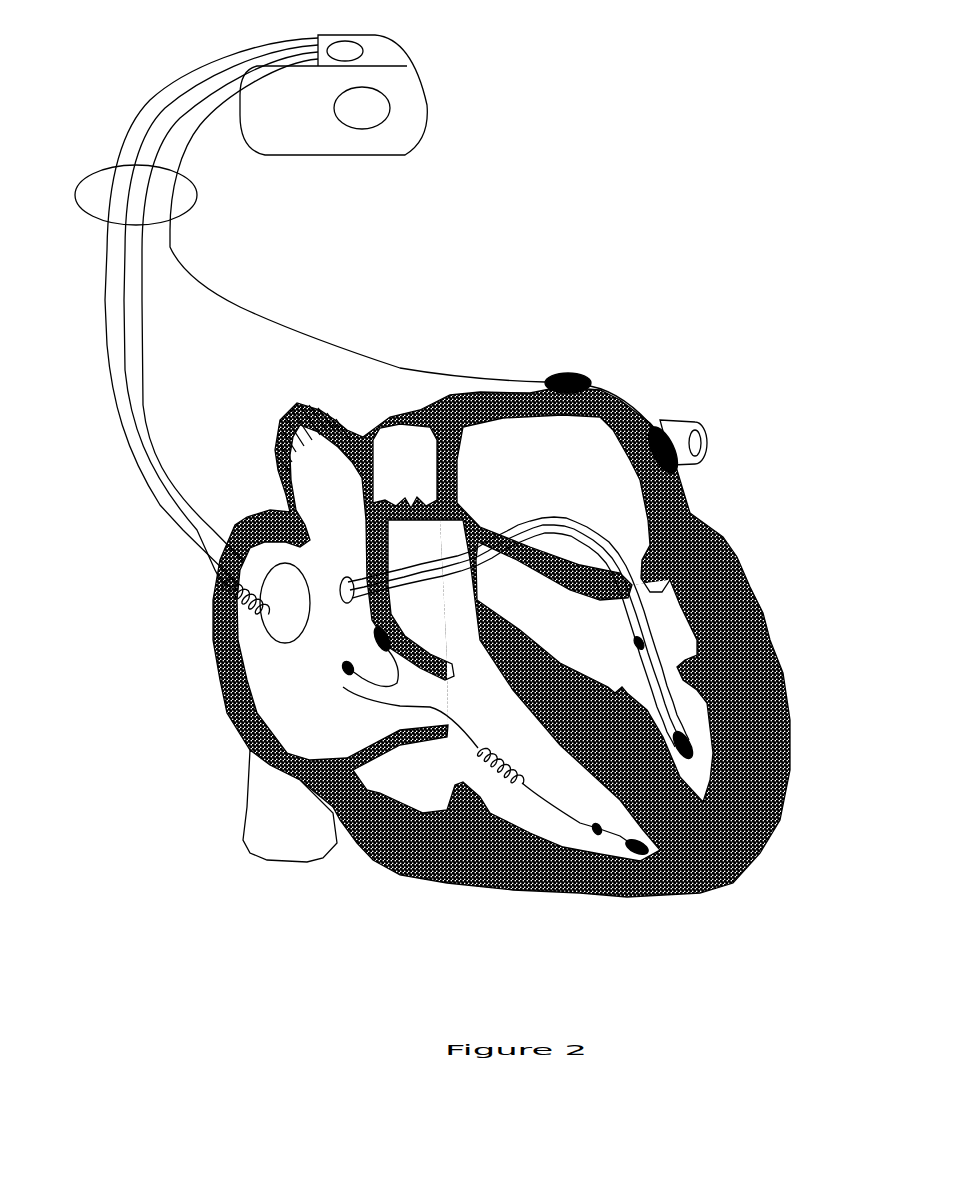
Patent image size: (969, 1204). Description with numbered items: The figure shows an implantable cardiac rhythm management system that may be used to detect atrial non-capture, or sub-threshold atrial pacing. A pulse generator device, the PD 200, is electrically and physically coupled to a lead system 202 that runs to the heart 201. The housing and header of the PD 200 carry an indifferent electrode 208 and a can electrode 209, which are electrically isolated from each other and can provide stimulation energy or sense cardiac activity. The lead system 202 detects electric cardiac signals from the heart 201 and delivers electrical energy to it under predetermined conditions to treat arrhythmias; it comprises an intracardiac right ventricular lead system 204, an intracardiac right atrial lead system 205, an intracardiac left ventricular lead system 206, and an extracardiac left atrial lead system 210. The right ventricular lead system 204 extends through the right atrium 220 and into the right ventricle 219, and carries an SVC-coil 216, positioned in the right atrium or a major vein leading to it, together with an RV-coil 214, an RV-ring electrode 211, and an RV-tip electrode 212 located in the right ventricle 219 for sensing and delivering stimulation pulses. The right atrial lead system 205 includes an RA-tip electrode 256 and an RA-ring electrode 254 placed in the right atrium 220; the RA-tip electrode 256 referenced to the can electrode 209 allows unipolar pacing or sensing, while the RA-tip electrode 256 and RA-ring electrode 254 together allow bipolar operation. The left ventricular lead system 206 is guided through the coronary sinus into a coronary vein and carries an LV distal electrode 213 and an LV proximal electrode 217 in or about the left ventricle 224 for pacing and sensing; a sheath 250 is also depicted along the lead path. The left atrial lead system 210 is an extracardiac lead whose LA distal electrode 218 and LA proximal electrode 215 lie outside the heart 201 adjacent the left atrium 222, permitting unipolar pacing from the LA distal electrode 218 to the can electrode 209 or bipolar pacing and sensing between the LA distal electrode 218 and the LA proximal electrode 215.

The pulse generator device (PD) 200 is at (380, 36).
The indifferent electrode 208 is at (338, 48).
The can electrode 209 is at (380, 108).
The lead system 202 is at (105, 178).
The right ventricular lead system 204 is at (108, 345).
The right atrial lead system 205 is at (125, 372).
The left ventricular lead system 206 is at (143, 405).
The left atrial lead system 210 is at (240, 305).
The LA proximal electrode 215 is at (566, 372).
The LA distal electrode 218 is at (660, 430).
The heart 201 is at (748, 585).
The right atrium 220 is at (345, 592).
The right ventricle 219 is at (506, 690).
The left atrium 222 is at (563, 503).
The left ventricle 224 is at (594, 672).
The SVC-coil 216 is at (215, 601).
The sheath 250 is at (342, 582).
The LV proximal electrode 217 is at (641, 642).
The LV distal electrode 213 is at (687, 757).
The RA-tip electrode 256 is at (378, 632).
The RA-ring electrode 254 is at (356, 667).
The RV-coil 214 is at (480, 752).
The RV-ring electrode 211 is at (596, 830).
The RV-tip electrode 212 is at (628, 840).